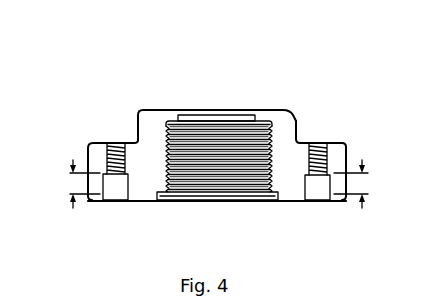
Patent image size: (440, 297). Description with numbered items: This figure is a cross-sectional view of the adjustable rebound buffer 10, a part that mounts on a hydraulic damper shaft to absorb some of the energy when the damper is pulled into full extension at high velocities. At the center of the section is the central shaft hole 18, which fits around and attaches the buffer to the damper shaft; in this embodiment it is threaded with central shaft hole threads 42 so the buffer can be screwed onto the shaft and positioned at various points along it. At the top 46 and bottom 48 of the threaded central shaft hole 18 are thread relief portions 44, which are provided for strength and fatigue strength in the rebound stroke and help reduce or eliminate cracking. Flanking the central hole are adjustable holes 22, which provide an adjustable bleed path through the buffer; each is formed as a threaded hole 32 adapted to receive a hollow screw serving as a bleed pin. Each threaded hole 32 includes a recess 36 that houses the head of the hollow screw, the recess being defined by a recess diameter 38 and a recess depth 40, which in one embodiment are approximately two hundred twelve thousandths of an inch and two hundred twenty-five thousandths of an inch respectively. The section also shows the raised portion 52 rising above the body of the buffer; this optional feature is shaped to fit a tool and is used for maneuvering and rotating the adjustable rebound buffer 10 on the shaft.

The adjustable rebound buffer 10 is at (91, 72).
The central shaft hole 18 is at (212, 115).
The adjustable hole 22 is at (147, 220).
The threaded hole 32 is at (113, 143).
The recess 36 is at (113, 183).
The recess diameter 38 is at (110, 214).
The recess depth 40 is at (77, 185).
The central shaft hole threads 42 is at (247, 152).
The thread relief portion 44 is at (136, 125).
The top of the threaded central shaft hole 46 is at (181, 100).
The bottom of the threaded central shaft hole 48 is at (206, 212).
The raised portion 52 is at (316, 124).